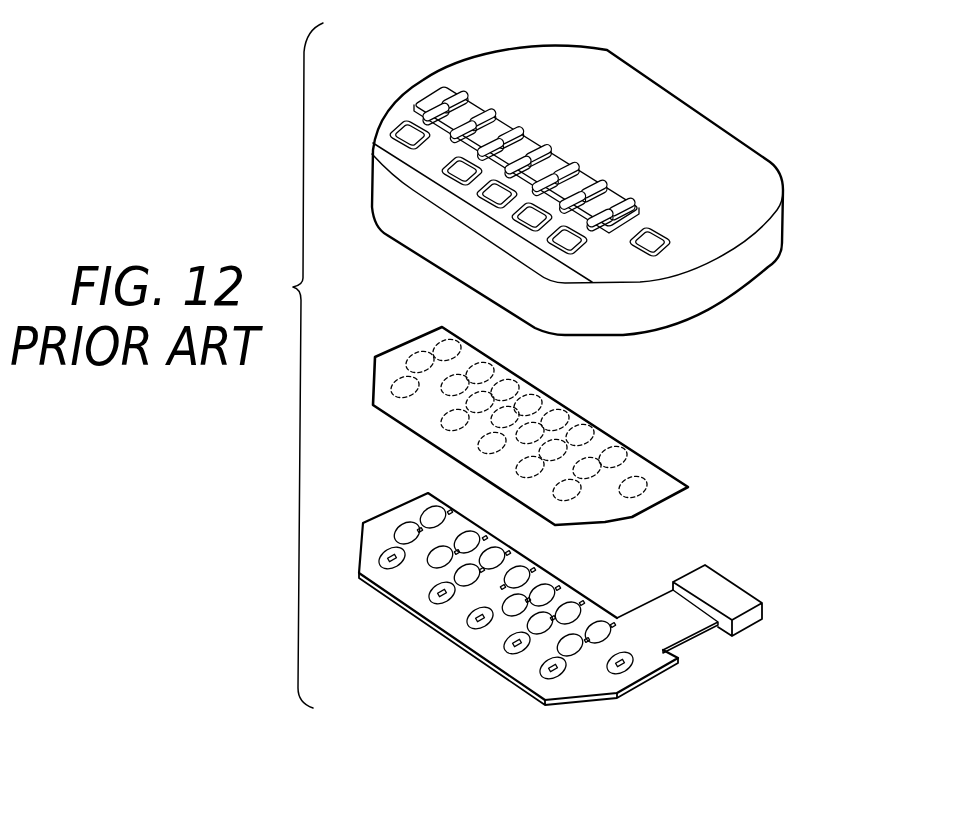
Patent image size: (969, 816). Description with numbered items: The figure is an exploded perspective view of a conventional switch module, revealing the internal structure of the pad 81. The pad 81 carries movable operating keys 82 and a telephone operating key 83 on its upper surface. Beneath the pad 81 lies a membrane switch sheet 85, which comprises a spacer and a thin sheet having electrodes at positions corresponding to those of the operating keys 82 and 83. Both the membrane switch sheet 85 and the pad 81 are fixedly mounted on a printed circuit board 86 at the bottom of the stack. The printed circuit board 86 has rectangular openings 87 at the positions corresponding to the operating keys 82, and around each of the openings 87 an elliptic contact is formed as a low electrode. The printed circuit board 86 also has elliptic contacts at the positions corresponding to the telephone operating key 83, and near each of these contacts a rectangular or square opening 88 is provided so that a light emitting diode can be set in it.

The pad 81 is at (710, 148).
The operating keys 82 is at (404, 134).
The telephone operating key 83 is at (440, 100).
The membrane switch sheet 85 is at (610, 445).
The printed circuit board 86 is at (657, 658).
The rectangular openings 87 is at (389, 560).
The rectangular or square opening 88 is at (450, 510).